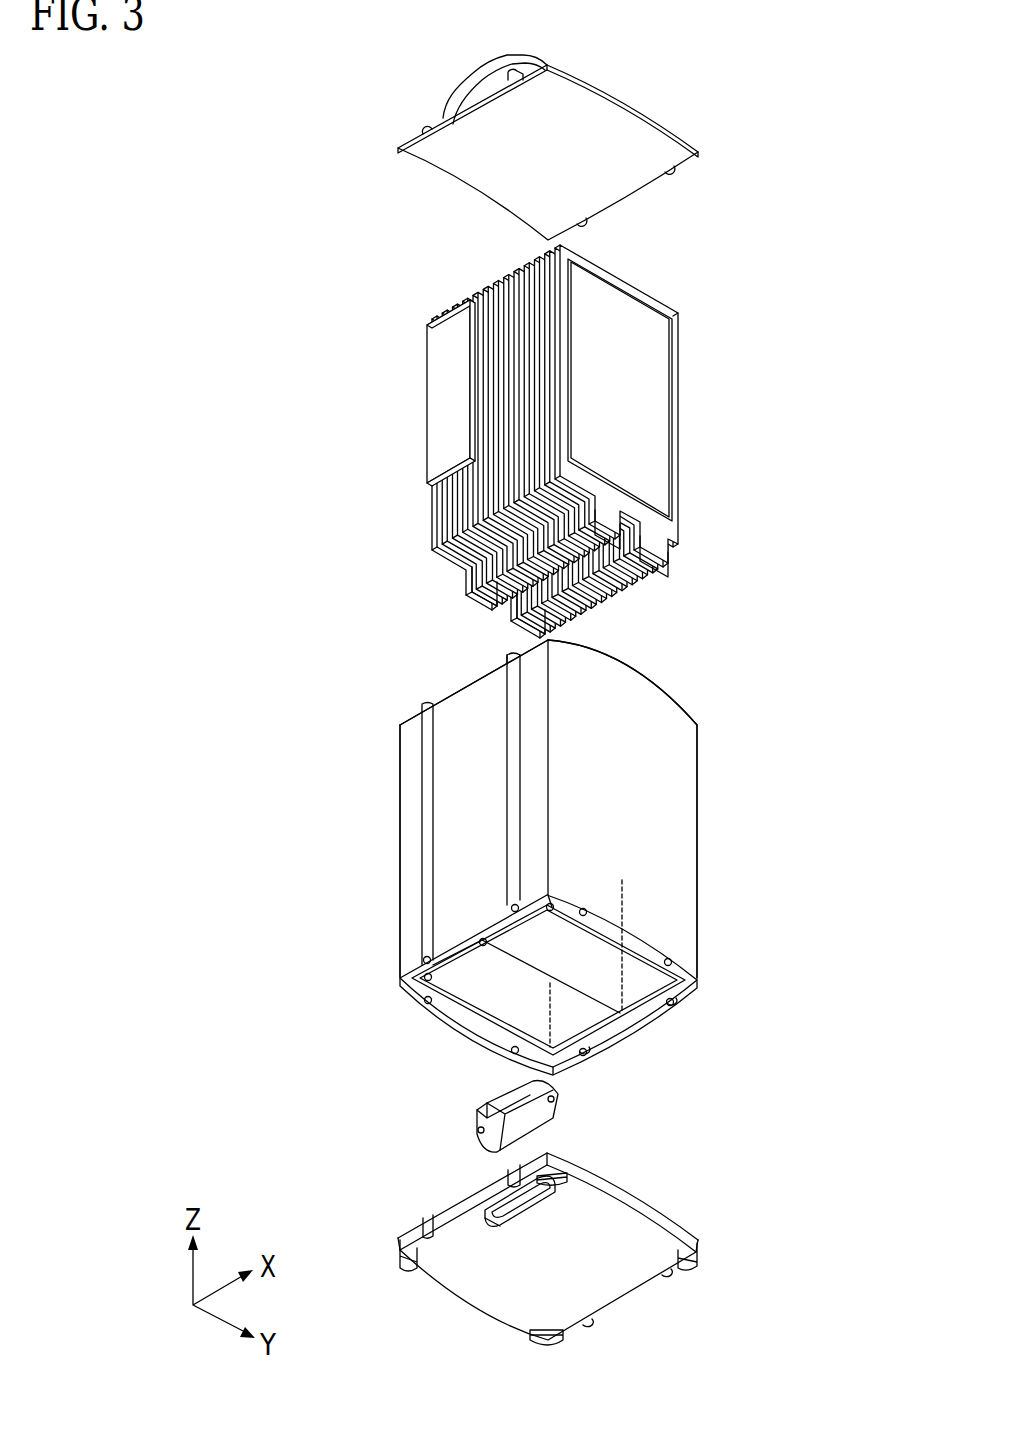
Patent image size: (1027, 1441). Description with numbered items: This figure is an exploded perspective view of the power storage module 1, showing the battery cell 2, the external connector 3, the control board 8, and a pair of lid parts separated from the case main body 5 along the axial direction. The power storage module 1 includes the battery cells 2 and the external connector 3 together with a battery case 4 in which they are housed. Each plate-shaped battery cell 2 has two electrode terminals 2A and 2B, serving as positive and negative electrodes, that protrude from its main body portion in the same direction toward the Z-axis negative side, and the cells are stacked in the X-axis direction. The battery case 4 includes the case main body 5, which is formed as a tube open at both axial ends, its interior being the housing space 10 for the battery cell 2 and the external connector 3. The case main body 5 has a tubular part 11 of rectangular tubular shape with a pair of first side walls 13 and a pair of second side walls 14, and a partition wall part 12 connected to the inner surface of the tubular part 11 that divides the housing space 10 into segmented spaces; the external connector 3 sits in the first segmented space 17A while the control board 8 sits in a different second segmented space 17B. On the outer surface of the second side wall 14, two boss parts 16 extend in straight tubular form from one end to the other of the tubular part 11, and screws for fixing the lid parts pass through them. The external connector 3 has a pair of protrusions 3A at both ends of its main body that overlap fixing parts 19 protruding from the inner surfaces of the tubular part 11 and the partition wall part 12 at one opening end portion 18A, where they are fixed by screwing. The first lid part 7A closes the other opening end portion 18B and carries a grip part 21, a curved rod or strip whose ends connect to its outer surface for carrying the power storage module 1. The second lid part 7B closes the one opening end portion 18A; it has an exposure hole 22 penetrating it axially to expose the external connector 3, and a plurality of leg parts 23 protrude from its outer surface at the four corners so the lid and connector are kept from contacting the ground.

The power storage module 1 is at (248, 125).
The battery cell 2 is at (558, 444).
The electrode terminal 2A is at (612, 517).
The electrode terminal 2B is at (655, 542).
The external connector 3 is at (501, 1135).
The protrusion 3A is at (558, 1097).
The battery case 4 is at (332, 978).
The case main body 5 is at (587, 879).
The first lid part 7A is at (632, 131).
The second lid part 7B is at (620, 1263).
The control board 8 is at (447, 390).
The housing space 10 is at (599, 999).
The tubular part 11 is at (548, 809).
The partition wall part 12 is at (530, 966).
The first side wall 13 is at (653, 779).
The second side wall 14 is at (466, 803).
The boss part 16 is at (425, 733).
The first segmented space 17A is at (660, 1010).
The second segmented space 17B is at (605, 1048).
The one opening end portion 18A is at (699, 980).
The other opening end portion 18B is at (699, 727).
The fixing part 19 is at (427, 956).
The grip part 21 is at (518, 56).
The exposure hole 22 is at (507, 1232).
The leg part 23 is at (556, 1182).